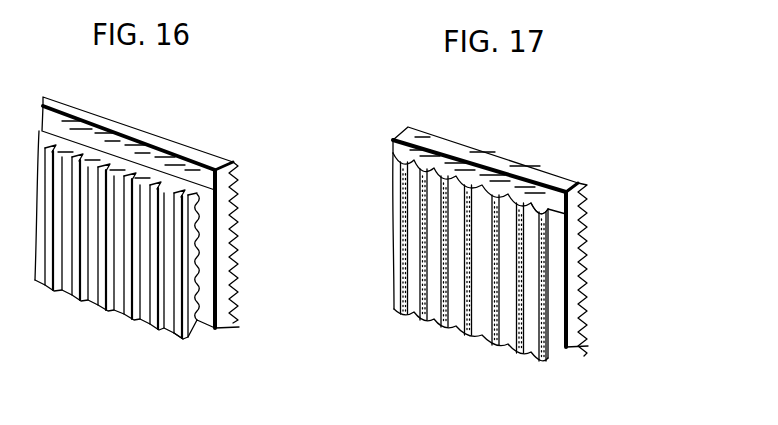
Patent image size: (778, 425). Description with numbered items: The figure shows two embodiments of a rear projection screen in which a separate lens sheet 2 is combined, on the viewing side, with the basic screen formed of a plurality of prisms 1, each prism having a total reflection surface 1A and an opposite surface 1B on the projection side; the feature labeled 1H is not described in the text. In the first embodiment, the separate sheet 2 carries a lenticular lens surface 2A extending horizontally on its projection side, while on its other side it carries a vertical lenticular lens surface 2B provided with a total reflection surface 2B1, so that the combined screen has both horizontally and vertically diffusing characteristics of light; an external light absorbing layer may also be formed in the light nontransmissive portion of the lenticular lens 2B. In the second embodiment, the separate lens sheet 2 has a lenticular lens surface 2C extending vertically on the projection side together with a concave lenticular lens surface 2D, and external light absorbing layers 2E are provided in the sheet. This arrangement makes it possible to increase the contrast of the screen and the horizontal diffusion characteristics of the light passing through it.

In FIG. 16, the prism 1 is at (185, 212).
In FIG. 17, the prism 1 is at (539, 241).
In FIG. 16, the total reflection surface 1A is at (233, 163).
In FIG. 17, the total reflection surface 1A is at (580, 181).
In FIG. 16, the opposite surface 1B is at (216, 174).
In FIG. 17, the opposite surface 1B is at (567, 192).
In FIG. 16, the top edge groove 1H is at (203, 171).
In FIG. 16, the separate lens sheet 2 is at (141, 265).
In FIG. 17, the separate lens sheet 2 is at (499, 283).
In FIG. 16, the lenticular lens surface 2A is at (218, 328).
In FIG. 16, the vertical lenticular lens surface 2B is at (165, 330).
In FIG. 16, the total reflection surface 2B1 is at (182, 326).
In FIG. 17, the lenticular lens surface 2C is at (549, 330).
In FIG. 17, the concave lenticular lens surface 2D is at (533, 342).
In FIG. 17, the external light absorbing layer 2E is at (518, 356).